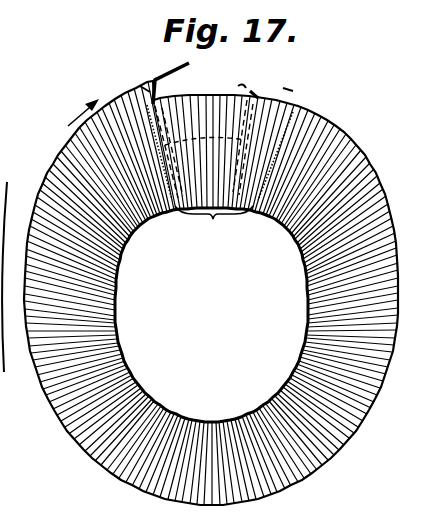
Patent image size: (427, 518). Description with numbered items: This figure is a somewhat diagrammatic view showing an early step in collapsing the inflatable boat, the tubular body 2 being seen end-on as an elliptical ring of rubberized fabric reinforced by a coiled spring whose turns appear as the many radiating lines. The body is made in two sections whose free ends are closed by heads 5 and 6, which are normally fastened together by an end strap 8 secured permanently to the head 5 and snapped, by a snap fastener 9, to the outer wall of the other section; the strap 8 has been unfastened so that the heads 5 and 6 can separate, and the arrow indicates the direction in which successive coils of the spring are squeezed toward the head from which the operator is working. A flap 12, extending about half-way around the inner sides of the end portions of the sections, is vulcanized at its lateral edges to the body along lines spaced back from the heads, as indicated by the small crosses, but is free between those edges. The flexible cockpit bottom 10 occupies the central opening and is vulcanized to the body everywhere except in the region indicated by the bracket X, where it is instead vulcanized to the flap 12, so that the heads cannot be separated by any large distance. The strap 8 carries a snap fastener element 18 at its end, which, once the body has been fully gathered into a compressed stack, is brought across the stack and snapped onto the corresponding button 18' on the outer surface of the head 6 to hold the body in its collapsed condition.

The tubular body 2 is at (308, 432).
The head 5 is at (147, 91).
The head 6 is at (242, 86).
The end strap 8 is at (155, 80).
The snap fastener 9 is at (288, 88).
The cockpit bottom 10 is at (221, 305).
The flap 12 is at (206, 112).
The snap fastener element 18 is at (171, 71).
The button 18' is at (272, 75).
The bracket X is at (214, 223).